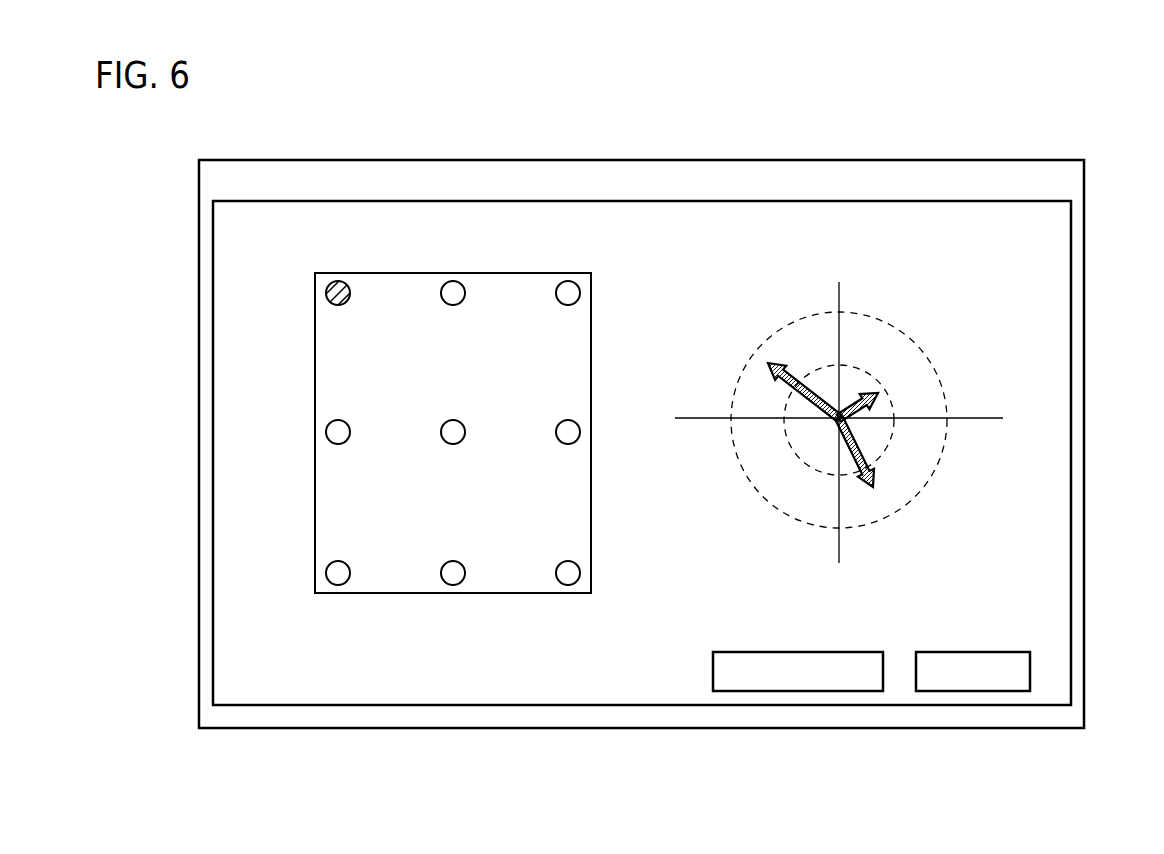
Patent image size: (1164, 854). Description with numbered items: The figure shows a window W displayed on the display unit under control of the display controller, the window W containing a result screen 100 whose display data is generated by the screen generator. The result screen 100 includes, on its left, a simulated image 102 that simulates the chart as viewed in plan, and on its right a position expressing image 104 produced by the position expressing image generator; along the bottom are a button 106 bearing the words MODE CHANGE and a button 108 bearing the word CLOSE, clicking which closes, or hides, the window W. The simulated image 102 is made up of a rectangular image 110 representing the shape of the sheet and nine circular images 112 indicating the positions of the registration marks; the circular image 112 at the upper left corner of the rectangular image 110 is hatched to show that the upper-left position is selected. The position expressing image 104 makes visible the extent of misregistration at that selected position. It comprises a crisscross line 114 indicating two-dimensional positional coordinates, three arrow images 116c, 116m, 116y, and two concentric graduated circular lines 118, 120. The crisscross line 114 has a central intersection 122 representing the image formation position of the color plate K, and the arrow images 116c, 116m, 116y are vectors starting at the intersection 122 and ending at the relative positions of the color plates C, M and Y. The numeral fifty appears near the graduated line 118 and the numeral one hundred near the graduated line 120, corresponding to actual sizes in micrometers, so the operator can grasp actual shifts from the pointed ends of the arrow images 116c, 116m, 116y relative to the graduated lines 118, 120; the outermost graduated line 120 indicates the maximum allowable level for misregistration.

The window W is at (903, 160).
The result screen 100 is at (1052, 266).
The simulated image 102 is at (411, 411).
The position expressing image 104 is at (856, 422).
The button 106 is at (813, 651).
The button 108 is at (972, 651).
The rectangular image 110 is at (493, 273).
The circular images 112 is at (340, 305).
The crisscross line 114 is at (978, 418).
The arrow image 116c is at (768, 366).
The arrow image 116m is at (887, 401).
The arrow image 116y is at (873, 483).
The graduated circular line 118 is at (808, 370).
The graduated circular line 120 is at (812, 315).
The central intersection 122 is at (835, 414).